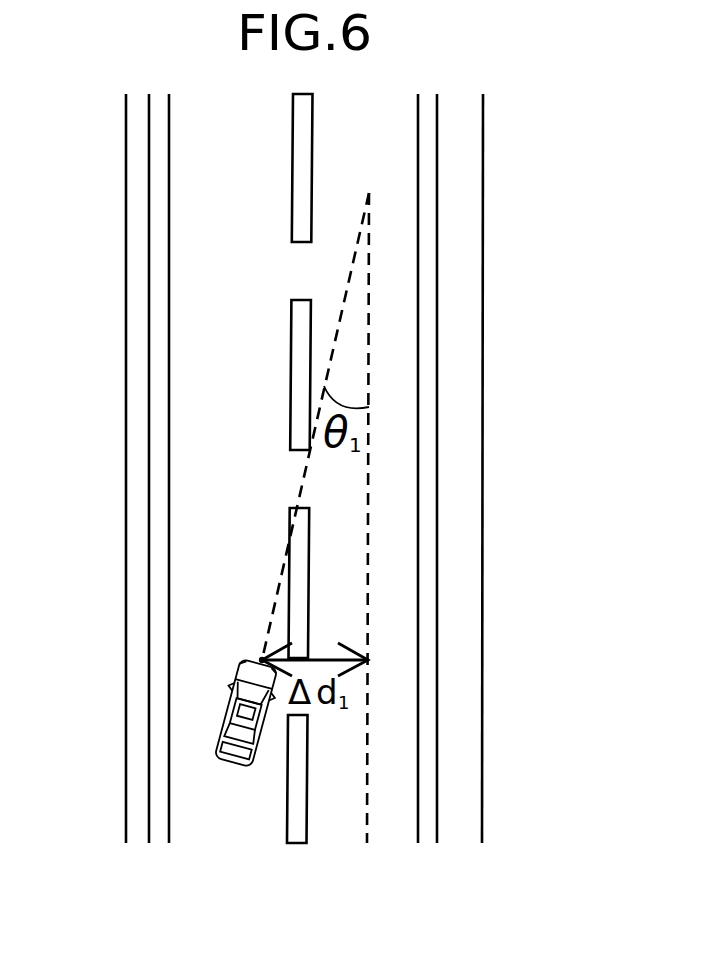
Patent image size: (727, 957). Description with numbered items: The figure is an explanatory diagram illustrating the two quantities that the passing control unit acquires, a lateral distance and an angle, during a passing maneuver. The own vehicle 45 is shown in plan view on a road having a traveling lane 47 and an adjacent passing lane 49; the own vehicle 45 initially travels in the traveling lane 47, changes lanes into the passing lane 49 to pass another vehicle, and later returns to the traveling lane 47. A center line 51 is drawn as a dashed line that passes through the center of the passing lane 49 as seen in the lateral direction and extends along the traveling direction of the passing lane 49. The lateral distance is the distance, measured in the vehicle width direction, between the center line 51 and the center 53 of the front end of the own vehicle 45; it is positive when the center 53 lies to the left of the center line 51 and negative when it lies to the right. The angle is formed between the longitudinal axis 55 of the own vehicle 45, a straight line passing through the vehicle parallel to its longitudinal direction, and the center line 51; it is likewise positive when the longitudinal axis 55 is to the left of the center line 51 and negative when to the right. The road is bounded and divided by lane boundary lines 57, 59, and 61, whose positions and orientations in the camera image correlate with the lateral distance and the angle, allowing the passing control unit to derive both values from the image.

The own vehicle 45 is at (233, 705).
The traveling lane 47 is at (228, 825).
The passing lane 49 is at (382, 825).
The center line 51 is at (369, 558).
The center of a front end of the own vehicle 53 is at (262, 660).
The longitudinal axis 55 is at (301, 490).
The lane boundary line 57 is at (162, 252).
The lane boundary line 59 is at (305, 157).
The lane boundary line 61 is at (427, 227).